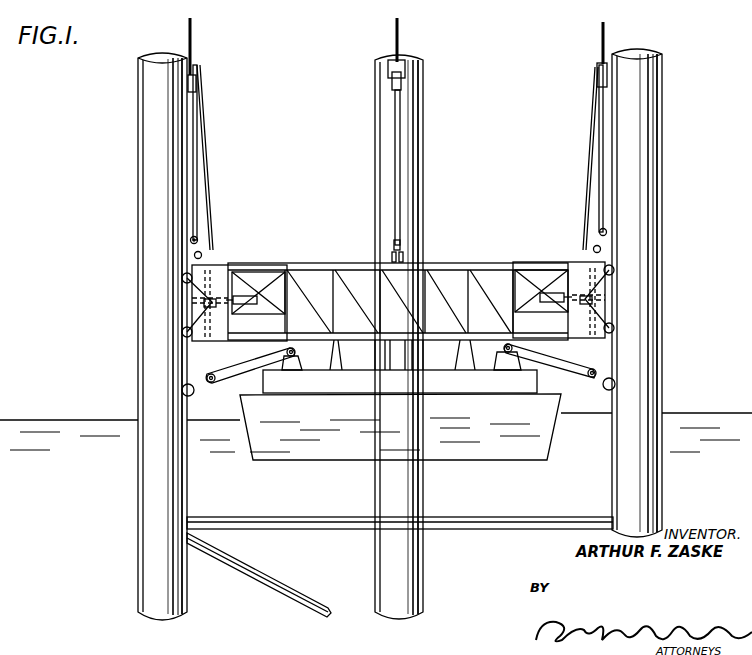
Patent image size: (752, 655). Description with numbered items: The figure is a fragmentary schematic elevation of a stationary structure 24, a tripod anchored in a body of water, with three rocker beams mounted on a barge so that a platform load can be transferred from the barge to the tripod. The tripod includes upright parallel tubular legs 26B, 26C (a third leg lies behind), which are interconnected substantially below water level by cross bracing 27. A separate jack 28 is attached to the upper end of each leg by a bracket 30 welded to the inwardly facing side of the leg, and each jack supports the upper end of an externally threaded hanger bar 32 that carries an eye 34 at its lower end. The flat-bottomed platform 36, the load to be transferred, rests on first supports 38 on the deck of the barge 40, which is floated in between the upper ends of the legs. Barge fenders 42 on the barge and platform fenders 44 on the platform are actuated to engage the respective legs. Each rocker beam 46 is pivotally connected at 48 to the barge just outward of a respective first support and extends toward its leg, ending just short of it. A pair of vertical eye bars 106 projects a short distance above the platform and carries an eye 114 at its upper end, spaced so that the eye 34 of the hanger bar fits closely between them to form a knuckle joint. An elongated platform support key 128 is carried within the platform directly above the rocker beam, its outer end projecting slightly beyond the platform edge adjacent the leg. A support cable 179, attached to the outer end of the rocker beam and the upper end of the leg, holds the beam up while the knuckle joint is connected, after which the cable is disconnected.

The stationary structure 24 is at (128, 148).
The tubular leg 26B is at (137, 84).
The tubular leg 26C is at (662, 186).
The cross bracing 27 is at (362, 530).
The jack 28 is at (596, 70).
The bracket 30 is at (194, 68).
The hanger bar 32 is at (197, 135).
The eye 34 is at (198, 240).
The platform 36 is at (458, 263).
The first supports 38 is at (386, 352).
The barge 40 is at (254, 455).
The barge fenders 42 is at (194, 402).
The platform fenders 44 is at (182, 278).
The rocker beam 46 is at (428, 360).
The pivotal connection 48 is at (298, 372).
The eye bars 106 is at (398, 290).
The eye 114 is at (194, 255).
The platform support key 128 is at (180, 300).
The support cable 179 is at (206, 190).